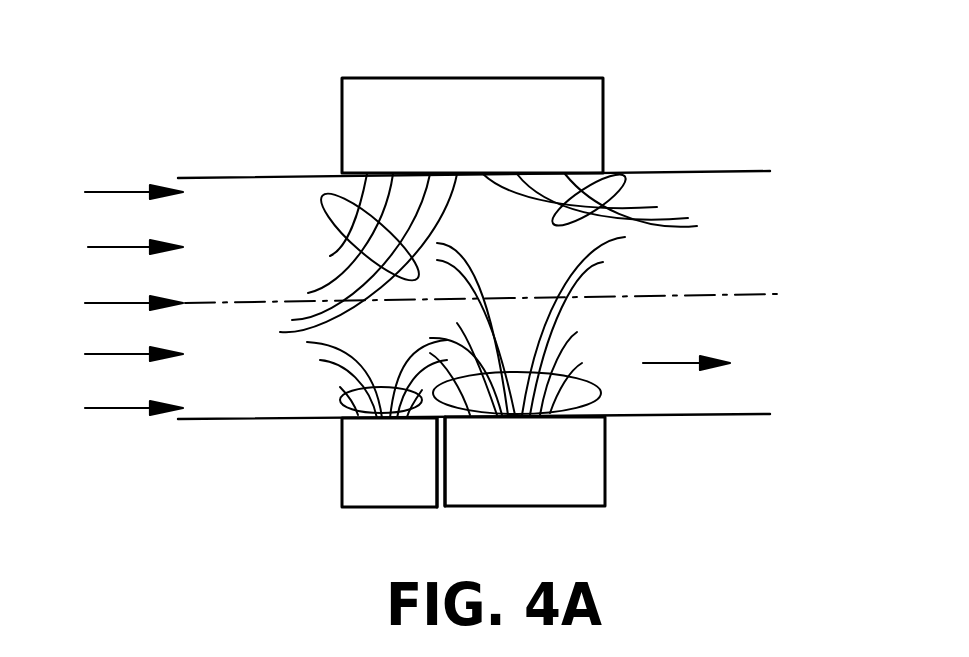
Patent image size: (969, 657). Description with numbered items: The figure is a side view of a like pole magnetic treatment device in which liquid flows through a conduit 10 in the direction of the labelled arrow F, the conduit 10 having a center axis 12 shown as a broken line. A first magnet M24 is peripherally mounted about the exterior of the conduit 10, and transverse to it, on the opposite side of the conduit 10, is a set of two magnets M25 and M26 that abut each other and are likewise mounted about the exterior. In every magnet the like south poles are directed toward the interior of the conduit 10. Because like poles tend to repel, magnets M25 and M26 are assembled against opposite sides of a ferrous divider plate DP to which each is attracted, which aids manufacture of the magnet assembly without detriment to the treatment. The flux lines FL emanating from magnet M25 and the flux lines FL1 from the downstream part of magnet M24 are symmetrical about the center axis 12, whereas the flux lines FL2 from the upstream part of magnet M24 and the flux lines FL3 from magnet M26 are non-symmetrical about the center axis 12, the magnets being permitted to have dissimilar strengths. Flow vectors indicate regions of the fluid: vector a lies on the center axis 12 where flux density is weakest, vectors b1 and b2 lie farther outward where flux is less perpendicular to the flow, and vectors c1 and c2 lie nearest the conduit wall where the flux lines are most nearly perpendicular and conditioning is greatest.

The conduit 10 is at (703, 172).
The center axis 12 is at (692, 296).
The first magnet M24 is at (543, 78).
The magnet M25 is at (342, 462).
The magnet M26 is at (605, 462).
The divider plate DP is at (440, 507).
The flux lines FL is at (343, 393).
The flux lines FL1 is at (322, 193).
The flux lines FL2 is at (633, 172).
The flux lines FL3 is at (600, 396).
The flow direction arrow F is at (686, 350).
The flow vector a is at (115, 298).
The flow vector b1 is at (115, 247).
The flow vector b2 is at (115, 357).
The flow vector c1 is at (114, 190).
The flow vector c2 is at (115, 406).